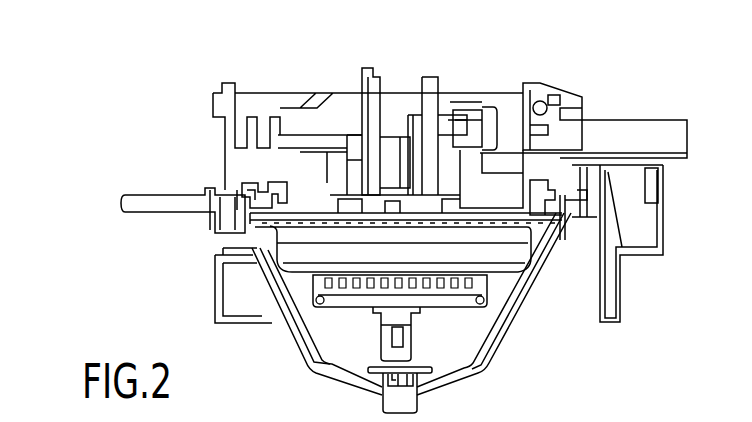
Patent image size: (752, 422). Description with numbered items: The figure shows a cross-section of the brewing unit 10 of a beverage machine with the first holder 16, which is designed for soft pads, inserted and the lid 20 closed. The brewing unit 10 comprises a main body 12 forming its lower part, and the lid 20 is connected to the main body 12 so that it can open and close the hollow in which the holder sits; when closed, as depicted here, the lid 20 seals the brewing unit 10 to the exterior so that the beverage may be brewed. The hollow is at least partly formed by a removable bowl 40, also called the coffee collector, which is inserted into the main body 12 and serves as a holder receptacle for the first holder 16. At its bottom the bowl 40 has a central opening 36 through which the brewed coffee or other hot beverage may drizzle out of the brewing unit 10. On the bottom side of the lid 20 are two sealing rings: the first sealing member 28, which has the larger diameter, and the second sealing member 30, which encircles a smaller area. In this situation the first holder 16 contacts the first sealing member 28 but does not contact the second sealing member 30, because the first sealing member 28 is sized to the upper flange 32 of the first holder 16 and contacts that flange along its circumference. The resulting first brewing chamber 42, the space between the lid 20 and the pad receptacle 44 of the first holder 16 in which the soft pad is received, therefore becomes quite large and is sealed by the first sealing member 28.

The brewing unit 10 is at (658, 73).
The main body 12 is at (493, 355).
The first holder 16 is at (237, 210).
The lid 20 is at (490, 102).
The first sealing member 28 is at (257, 185).
The second sealing member 30 is at (357, 195).
The upper flange 32 is at (233, 207).
The central opening 36 is at (400, 403).
The bowl 40 is at (507, 328).
The first brewing chamber 42 is at (488, 253).
The pad receptacle 44 is at (315, 273).